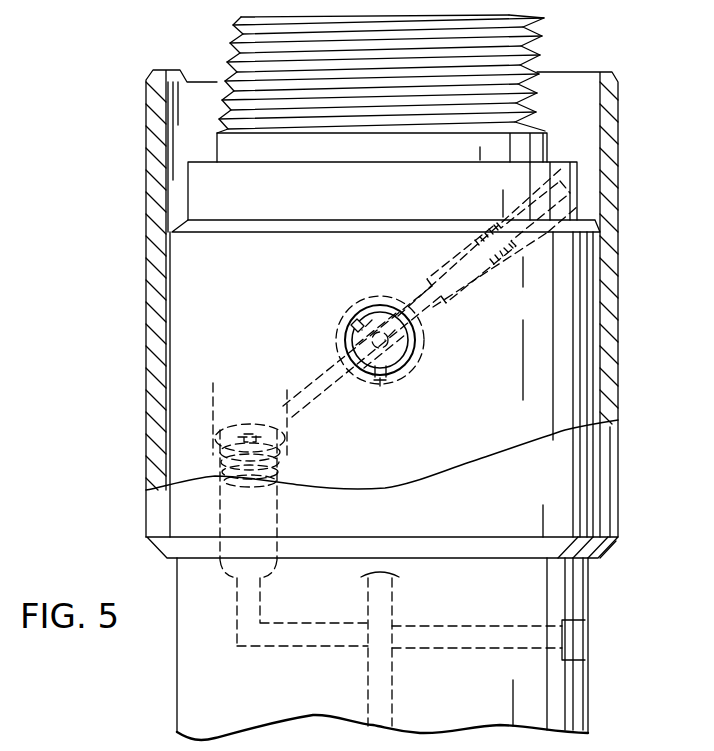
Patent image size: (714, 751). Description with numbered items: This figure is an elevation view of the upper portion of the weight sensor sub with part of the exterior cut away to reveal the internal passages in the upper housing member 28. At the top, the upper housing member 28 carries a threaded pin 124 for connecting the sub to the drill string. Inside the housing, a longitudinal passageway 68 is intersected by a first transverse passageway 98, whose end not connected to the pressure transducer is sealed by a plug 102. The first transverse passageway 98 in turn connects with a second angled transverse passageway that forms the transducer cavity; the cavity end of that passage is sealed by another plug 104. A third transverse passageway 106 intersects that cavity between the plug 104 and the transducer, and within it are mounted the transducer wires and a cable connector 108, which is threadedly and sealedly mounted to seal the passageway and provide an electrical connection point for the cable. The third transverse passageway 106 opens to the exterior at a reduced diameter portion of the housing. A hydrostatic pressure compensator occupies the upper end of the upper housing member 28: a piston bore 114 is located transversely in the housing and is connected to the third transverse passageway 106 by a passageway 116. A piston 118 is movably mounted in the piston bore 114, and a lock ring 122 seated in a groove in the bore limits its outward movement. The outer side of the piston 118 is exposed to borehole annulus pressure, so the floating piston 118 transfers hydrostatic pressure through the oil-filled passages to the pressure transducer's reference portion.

The upper housing member 28 is at (177, 655).
The longitudinal passageway 68 is at (400, 684).
The first transverse passageway 98 is at (272, 633).
The plug 102 is at (578, 632).
The plug 104 is at (213, 429).
The third transverse passageway 106 is at (322, 367).
The cable connector 108 is at (480, 284).
The piston bore 114 is at (356, 310).
The piston 118 is at (346, 334).
The lock ring 122 is at (402, 362).
The threaded pin 124 is at (533, 51).
The passageway 116 is at (614, 395).